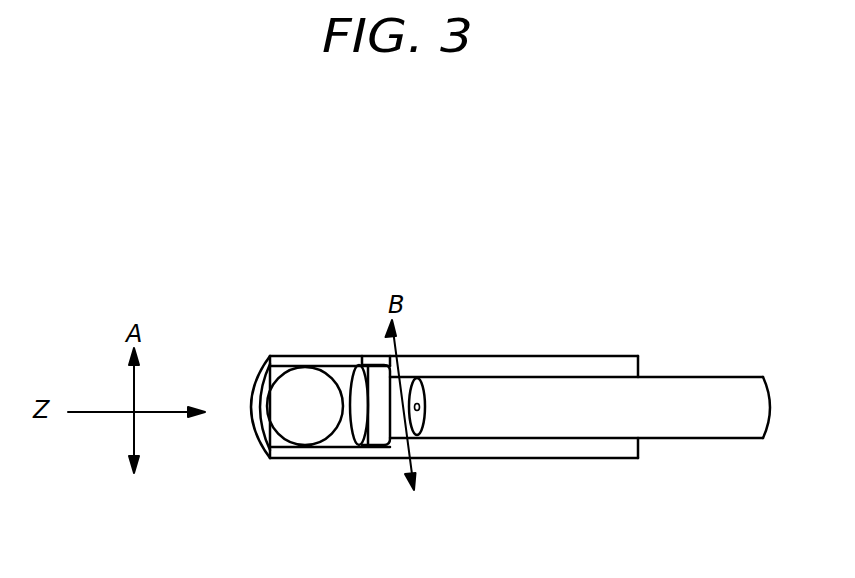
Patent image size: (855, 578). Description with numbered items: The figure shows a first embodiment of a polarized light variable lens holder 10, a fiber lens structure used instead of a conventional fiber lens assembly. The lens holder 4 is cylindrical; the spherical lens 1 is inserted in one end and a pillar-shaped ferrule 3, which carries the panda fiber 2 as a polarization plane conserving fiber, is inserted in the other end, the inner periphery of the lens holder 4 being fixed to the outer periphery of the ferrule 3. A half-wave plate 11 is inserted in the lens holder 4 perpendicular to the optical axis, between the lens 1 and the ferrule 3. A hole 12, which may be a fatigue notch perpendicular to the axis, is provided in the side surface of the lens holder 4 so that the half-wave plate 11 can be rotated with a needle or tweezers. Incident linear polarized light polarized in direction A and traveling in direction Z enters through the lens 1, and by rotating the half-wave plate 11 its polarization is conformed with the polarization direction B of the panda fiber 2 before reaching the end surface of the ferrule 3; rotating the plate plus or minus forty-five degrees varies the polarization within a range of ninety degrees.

The spherical lens 1 is at (283, 424).
The panda fiber 2 is at (425, 400).
The ferrule 3 is at (559, 428).
The lens holder 4 is at (272, 357).
The polarized light variable lens holder 10 is at (425, 333).
The λ/2 plate 11 is at (375, 438).
The hole 12 is at (372, 362).